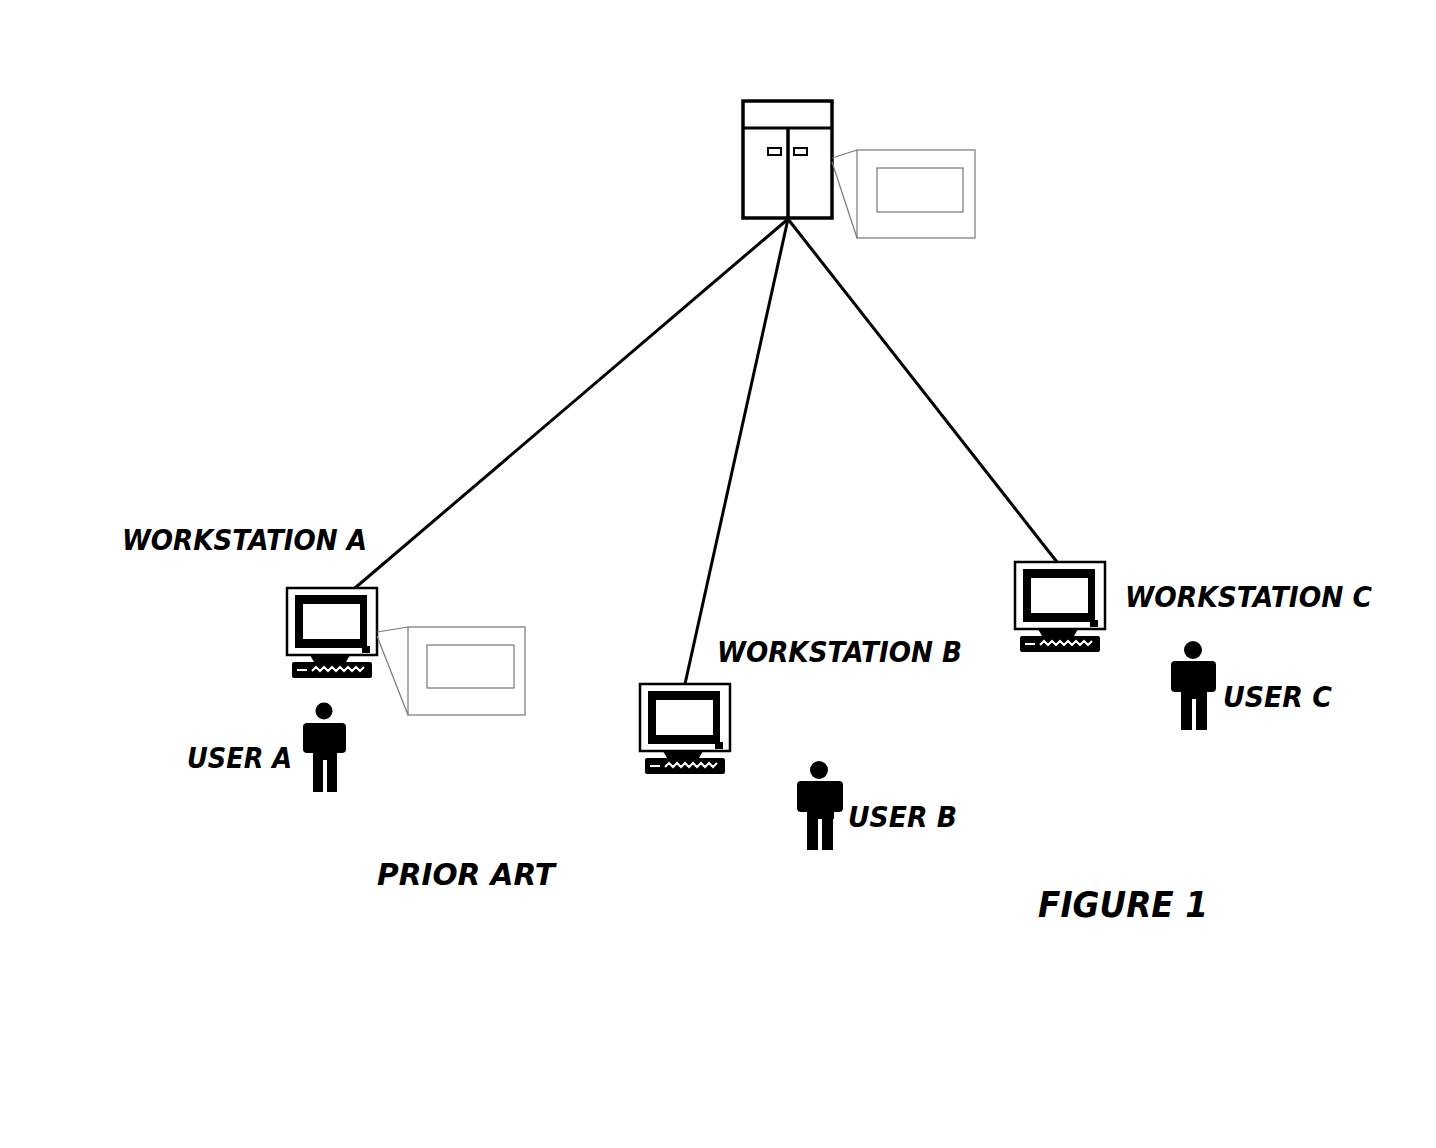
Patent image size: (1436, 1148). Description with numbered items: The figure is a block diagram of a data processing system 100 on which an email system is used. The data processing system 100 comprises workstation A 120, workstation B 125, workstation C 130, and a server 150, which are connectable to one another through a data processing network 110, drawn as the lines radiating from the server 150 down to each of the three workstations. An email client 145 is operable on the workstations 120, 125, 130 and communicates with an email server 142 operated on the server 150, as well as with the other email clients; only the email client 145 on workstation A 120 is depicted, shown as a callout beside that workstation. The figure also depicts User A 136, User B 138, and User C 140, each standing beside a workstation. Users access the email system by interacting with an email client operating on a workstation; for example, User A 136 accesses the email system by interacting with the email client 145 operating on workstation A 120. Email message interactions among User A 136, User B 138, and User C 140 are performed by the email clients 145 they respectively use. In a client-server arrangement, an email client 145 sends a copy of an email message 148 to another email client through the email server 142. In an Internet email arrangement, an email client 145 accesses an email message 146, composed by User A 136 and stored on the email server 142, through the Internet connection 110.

The data processing system 100 is at (1124, 318).
The data processing network 110 is at (571, 401).
The workstation A 120 is at (287, 632).
The workstation B 125 is at (684, 775).
The workstation C 130 is at (1060, 652).
The User A 136 is at (322, 792).
The User B 138 is at (800, 850).
The User C 140 is at (1175, 730).
The email server 142 is at (945, 238).
The email client 145 is at (497, 715).
The email message 146 is at (948, 167).
The email message 148 is at (497, 645).
The server 150 is at (743, 169).